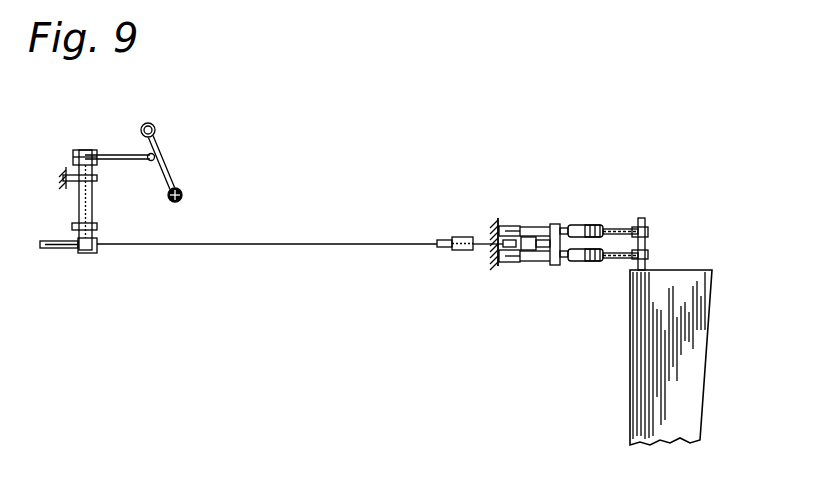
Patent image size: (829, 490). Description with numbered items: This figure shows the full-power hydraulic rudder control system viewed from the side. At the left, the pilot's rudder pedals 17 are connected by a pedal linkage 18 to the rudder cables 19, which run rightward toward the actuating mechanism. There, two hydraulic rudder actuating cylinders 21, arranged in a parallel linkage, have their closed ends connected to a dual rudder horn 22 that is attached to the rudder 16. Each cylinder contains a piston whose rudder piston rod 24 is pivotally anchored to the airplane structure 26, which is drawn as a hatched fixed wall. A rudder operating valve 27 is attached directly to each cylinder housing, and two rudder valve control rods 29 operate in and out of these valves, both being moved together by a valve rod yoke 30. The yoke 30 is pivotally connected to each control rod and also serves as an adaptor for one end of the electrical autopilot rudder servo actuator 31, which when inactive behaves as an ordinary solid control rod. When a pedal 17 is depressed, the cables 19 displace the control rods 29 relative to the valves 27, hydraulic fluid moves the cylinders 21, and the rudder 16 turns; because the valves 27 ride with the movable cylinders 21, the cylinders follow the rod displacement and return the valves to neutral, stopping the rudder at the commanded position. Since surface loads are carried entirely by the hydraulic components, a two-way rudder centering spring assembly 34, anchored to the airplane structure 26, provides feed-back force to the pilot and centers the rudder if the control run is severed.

The rudder 16 is at (695, 350).
The pilot's rudder pedals 17 is at (168, 158).
The pedal linkage 18 is at (97, 128).
The rudder cables 19 is at (290, 243).
The hydraulic rudder actuating cylinders 21 is at (600, 225).
The dual rudder horn 22 is at (647, 252).
The rudder piston rod 24 is at (527, 226).
The airplane structure 26 is at (498, 222).
The rudder operating valve 27 is at (587, 225).
The rudder valve control rods 29 is at (562, 226).
The valve rod yoke 30 is at (553, 262).
The electrical autopilot rudder servo actuator 31 is at (528, 236).
The two-way rudder centering spring assembly 34 is at (453, 255).